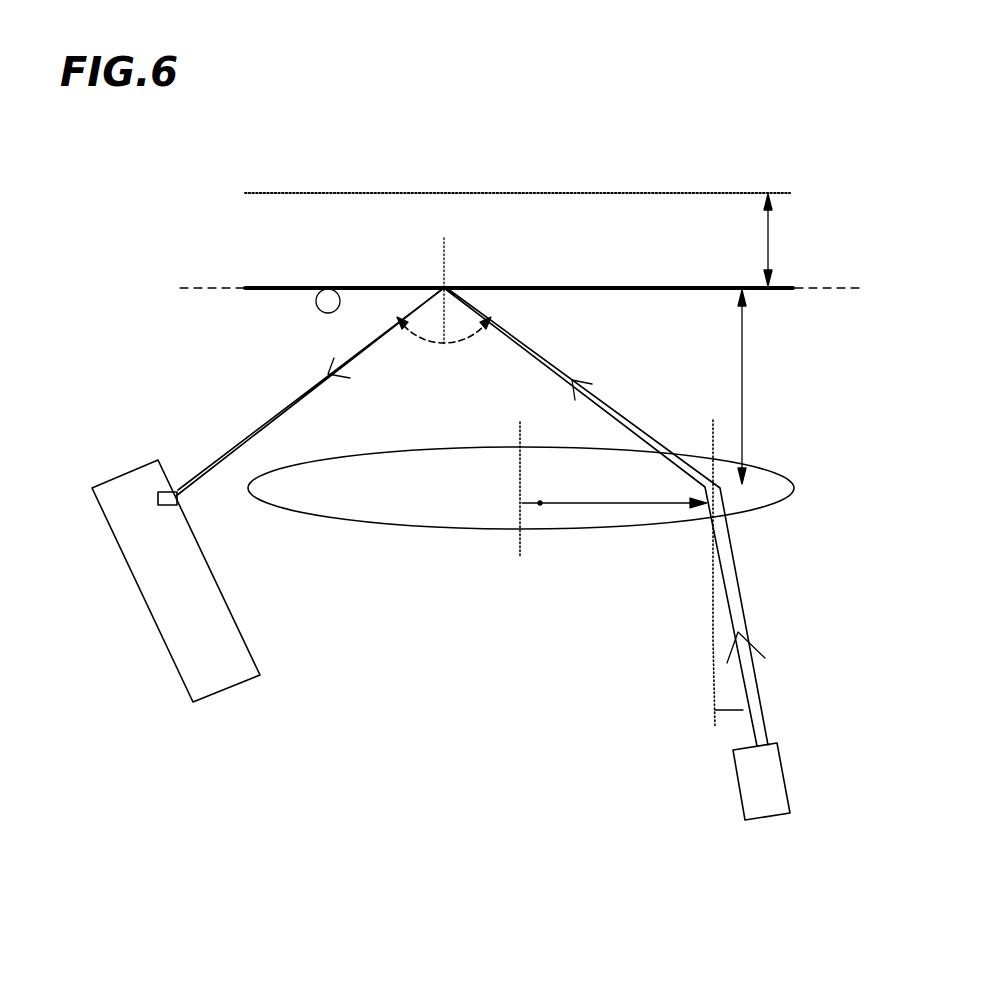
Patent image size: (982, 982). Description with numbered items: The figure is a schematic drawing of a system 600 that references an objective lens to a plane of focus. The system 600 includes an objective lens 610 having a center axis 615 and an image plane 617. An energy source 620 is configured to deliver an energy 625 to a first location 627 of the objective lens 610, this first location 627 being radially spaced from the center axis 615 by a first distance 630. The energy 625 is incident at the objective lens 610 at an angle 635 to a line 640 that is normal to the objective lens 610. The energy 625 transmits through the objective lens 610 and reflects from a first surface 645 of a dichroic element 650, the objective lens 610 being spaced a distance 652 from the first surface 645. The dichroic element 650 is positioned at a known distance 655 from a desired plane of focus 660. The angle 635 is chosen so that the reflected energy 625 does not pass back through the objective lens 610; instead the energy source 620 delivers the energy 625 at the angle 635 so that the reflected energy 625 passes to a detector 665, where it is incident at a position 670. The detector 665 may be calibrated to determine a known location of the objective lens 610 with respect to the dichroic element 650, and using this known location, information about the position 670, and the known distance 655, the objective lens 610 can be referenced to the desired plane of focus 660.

The system 600 is at (672, 146).
The objective lens 610 is at (783, 488).
The center axis 615 is at (521, 555).
The image plane 617 is at (203, 287).
The energy source 620 is at (770, 790).
The energy 625 is at (758, 727).
The first location 627 is at (713, 420).
The first distance 630 is at (628, 503).
The angle 635 is at (730, 712).
The line 640 is at (715, 680).
The first surface 645 is at (338, 290).
The dichroic element 650 is at (793, 287).
The distance 652 is at (742, 390).
The known distance 655 is at (768, 233).
The desired plane of focus 660 is at (793, 193).
The detector 665 is at (230, 655).
The position 670 is at (172, 505).